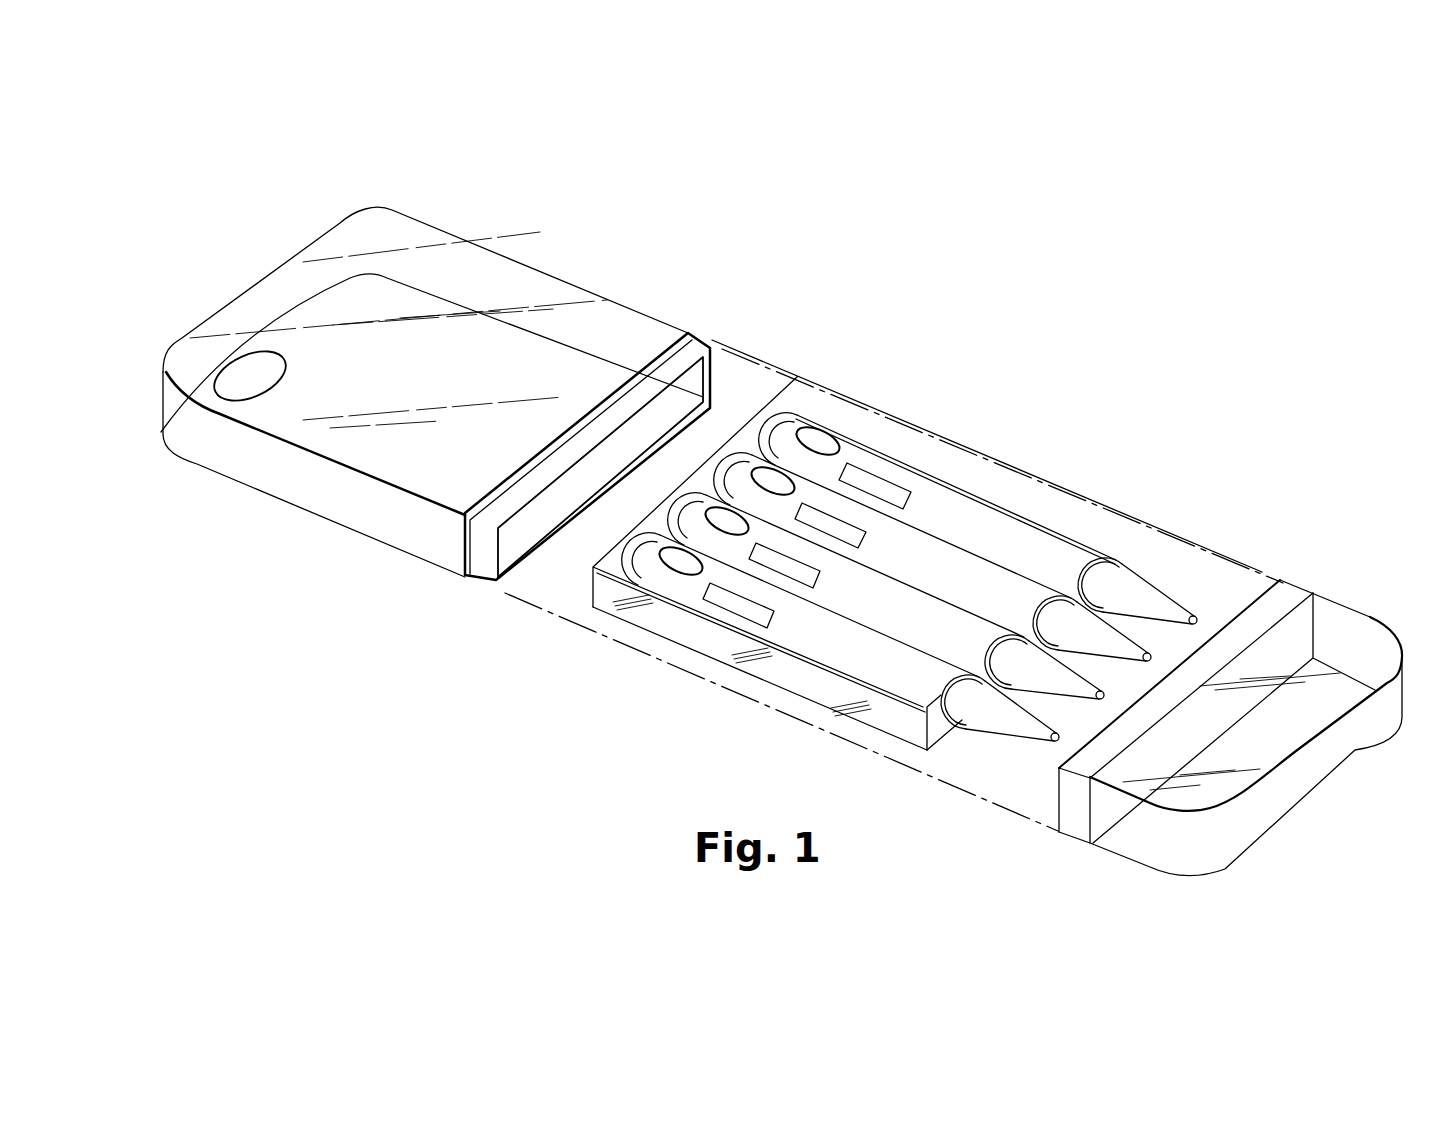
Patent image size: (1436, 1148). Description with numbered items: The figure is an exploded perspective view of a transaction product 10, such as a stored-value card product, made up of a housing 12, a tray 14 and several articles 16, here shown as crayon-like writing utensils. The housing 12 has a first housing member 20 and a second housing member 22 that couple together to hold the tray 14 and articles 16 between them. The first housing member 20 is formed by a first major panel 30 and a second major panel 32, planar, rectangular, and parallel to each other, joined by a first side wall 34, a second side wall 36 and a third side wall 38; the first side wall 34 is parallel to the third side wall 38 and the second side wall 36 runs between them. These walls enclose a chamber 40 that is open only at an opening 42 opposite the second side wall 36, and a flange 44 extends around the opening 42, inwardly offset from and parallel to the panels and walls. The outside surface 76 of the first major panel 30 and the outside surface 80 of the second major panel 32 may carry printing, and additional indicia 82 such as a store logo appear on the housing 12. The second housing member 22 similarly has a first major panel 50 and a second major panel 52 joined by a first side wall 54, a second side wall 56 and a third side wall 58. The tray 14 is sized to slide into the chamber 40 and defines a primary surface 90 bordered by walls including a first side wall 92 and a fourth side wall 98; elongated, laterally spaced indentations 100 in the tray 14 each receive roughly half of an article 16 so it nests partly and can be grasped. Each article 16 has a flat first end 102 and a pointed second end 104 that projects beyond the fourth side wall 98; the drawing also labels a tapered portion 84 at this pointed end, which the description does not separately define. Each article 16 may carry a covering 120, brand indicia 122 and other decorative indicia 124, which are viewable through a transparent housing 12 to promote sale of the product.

The transaction product 10 is at (348, 180).
The housing 12 is at (1070, 845).
The tray 14 is at (684, 643).
The article 16 is at (1182, 590).
The first housing member 20 is at (327, 510).
The second housing member 22 is at (1213, 857).
The first major panel 30 is at (278, 298).
The second major panel 32 is at (190, 460).
The first side wall 34 is at (450, 565).
The second side wall 36 is at (205, 322).
The third side wall 38 is at (503, 263).
The chamber 40 is at (714, 378).
The opening 42 is at (518, 544).
The flange 44 is at (690, 340).
The first major panel 50 is at (1350, 698).
The second major panel 52 is at (1128, 851).
The first side wall 54 is at (1070, 823).
The second side wall 56 is at (1330, 763).
The third side wall 58 is at (1366, 613).
The outside surface 76 is at (565, 312).
The outside surface 80 is at (373, 538).
The indicia 82 is at (215, 370).
The conical cap 84 is at (1130, 586).
The primary surface 90 is at (762, 416).
The first side wall 92 is at (770, 669).
The fourth side wall 98 is at (936, 737).
The indentation 100 is at (917, 711).
The first end 102 is at (795, 427).
The second end 104 is at (1187, 578).
The covering 120 is at (1033, 540).
The brand indicia 122 is at (828, 437).
The indicia 124 is at (898, 482).